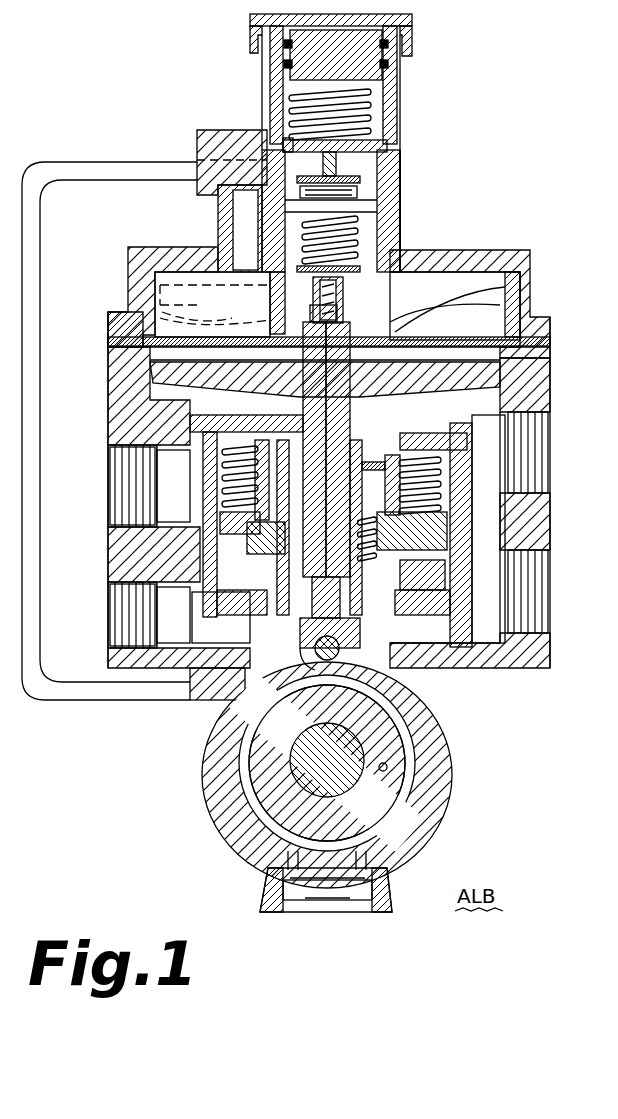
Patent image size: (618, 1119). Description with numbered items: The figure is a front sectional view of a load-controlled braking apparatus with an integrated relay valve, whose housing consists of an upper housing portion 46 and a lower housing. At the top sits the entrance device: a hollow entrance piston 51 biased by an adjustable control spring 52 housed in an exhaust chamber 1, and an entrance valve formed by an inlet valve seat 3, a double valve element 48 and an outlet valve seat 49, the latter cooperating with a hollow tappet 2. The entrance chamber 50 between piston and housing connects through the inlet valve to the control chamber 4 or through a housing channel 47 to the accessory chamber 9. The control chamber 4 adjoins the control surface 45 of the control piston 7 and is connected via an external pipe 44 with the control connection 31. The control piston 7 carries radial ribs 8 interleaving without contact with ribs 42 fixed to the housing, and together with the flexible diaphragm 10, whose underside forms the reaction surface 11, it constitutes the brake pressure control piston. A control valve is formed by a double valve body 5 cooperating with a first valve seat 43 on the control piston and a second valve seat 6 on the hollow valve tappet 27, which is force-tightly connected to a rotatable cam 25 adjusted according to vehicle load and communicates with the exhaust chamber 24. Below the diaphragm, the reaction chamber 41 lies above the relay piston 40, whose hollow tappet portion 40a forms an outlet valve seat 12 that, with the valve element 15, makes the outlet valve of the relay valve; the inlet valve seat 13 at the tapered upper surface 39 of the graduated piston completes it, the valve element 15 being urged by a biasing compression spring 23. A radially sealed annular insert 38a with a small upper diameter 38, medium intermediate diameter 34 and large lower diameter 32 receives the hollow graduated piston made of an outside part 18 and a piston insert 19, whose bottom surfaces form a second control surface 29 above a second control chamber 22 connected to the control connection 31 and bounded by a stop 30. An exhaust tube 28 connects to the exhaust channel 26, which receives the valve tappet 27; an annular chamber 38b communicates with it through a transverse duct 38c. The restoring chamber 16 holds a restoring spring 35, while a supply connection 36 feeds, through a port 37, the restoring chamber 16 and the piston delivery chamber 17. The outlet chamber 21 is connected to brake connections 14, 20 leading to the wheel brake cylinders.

The exhaust chamber 1 is at (367, 85).
The hollow tappet 2 is at (357, 147).
The inlet valve seat 3 is at (350, 157).
The control chamber 4 is at (383, 197).
The double valve body 5 is at (290, 257).
The second valve seat 6 is at (343, 292).
The control piston 7 is at (383, 240).
The radial ribs 8 is at (488, 290).
The accessory chamber 9 is at (488, 317).
The flexible diaphragm 10 is at (533, 330).
The reaction surface 11 is at (533, 348).
The outlet valve seat 12 is at (310, 372).
The inlet valve seat 13 is at (300, 370).
The brake connection 14 is at (537, 483).
The valve element 15 is at (373, 470).
The restoring chamber 16 is at (427, 480).
The piston delivery chamber 17 is at (390, 505).
The outside part of graduated piston 18 is at (400, 533).
The piston insert 19 is at (440, 557).
The brake connection 20 is at (537, 613).
The outlet chamber 21 is at (487, 630).
The second control chamber 22 is at (410, 613).
The biasing compression spring 23 is at (233, 557).
The exhaust chamber 24 is at (408, 798).
The rotatable cam 25 is at (377, 810).
The exhaust channel 26 is at (353, 647).
The valve tappet 27 is at (317, 647).
The exhaust tube 28 is at (297, 647).
The second control surface 29 is at (437, 613).
The stop 30 is at (213, 625).
The control connection 31 is at (120, 630).
The large lower diameter 32 is at (443, 573).
The medium intermediate diameter 34 is at (220, 550).
The restoring spring 35 is at (227, 478).
The supply connection 36 is at (127, 505).
The port 37 is at (245, 505).
The small upper diameter 38 is at (433, 432).
The annular insert 38a is at (183, 455).
The annular chamber 38b is at (203, 587).
The transverse duct 38c is at (377, 547).
The upper surface 39 is at (200, 413).
The relay piston 40 is at (167, 378).
The hollow tappet portion 40a is at (445, 323).
The reaction chamber 41 is at (143, 322).
The ribs 42 is at (150, 297).
The first valve seat 43 is at (270, 295).
The external pipe 44 is at (33, 217).
The control surface 45 is at (250, 210).
The upper housing portion 46 is at (213, 145).
The housing channel 47 is at (210, 193).
The double valve element 48 is at (350, 180).
The outlet valve seat 49 is at (357, 168).
The entrance chamber 50 is at (297, 147).
The entrance piston 51 is at (277, 100).
The adjustable control spring 52 is at (297, 70).